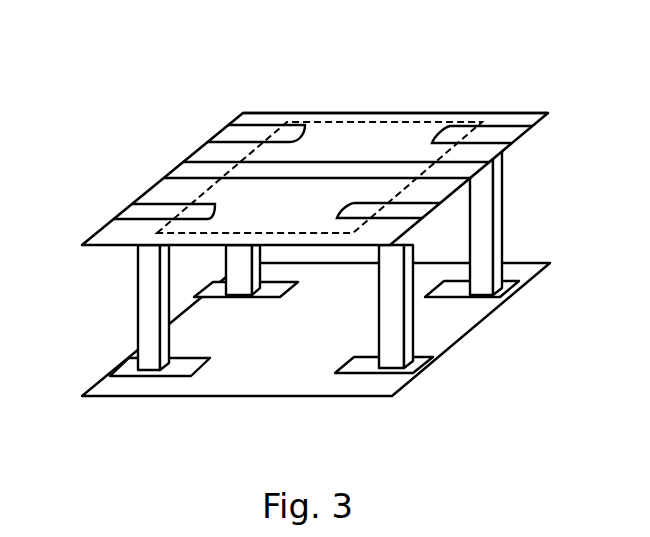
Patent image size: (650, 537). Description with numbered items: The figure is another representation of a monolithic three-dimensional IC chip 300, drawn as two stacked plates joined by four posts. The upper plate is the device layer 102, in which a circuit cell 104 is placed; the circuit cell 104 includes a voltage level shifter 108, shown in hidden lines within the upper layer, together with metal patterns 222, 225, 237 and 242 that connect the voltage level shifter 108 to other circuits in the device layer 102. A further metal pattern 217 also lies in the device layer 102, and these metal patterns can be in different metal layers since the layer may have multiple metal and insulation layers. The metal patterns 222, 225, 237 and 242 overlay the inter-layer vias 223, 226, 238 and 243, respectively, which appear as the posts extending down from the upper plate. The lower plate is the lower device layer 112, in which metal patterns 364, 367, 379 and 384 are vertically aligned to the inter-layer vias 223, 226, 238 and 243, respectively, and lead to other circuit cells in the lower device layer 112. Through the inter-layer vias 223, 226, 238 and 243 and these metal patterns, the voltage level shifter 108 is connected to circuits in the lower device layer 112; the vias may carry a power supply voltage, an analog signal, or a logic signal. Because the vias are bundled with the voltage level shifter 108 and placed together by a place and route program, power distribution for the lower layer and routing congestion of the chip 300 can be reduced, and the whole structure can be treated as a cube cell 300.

The monolithic 3D IC chip 300 is at (329, 240).
The device layer 102 is at (317, 113).
The circuit cell 104 is at (500, 112).
The voltage level shifter 108 is at (400, 118).
The metal pattern 217 is at (188, 170).
The metal pattern 237 is at (230, 135).
The metal pattern 242 is at (132, 207).
The metal pattern 225 is at (507, 137).
The metal pattern 222 is at (417, 212).
The inter-layer via 243 is at (148, 302).
The inter-layer via 238 is at (240, 268).
The inter-layer via 223 is at (412, 312).
The inter-layer via 226 is at (500, 223).
The metal pattern 379 is at (292, 283).
The metal pattern 384 is at (180, 378).
The metal pattern 364 is at (362, 374).
The metal pattern 367 is at (508, 288).
The lower device layer 112 is at (290, 398).